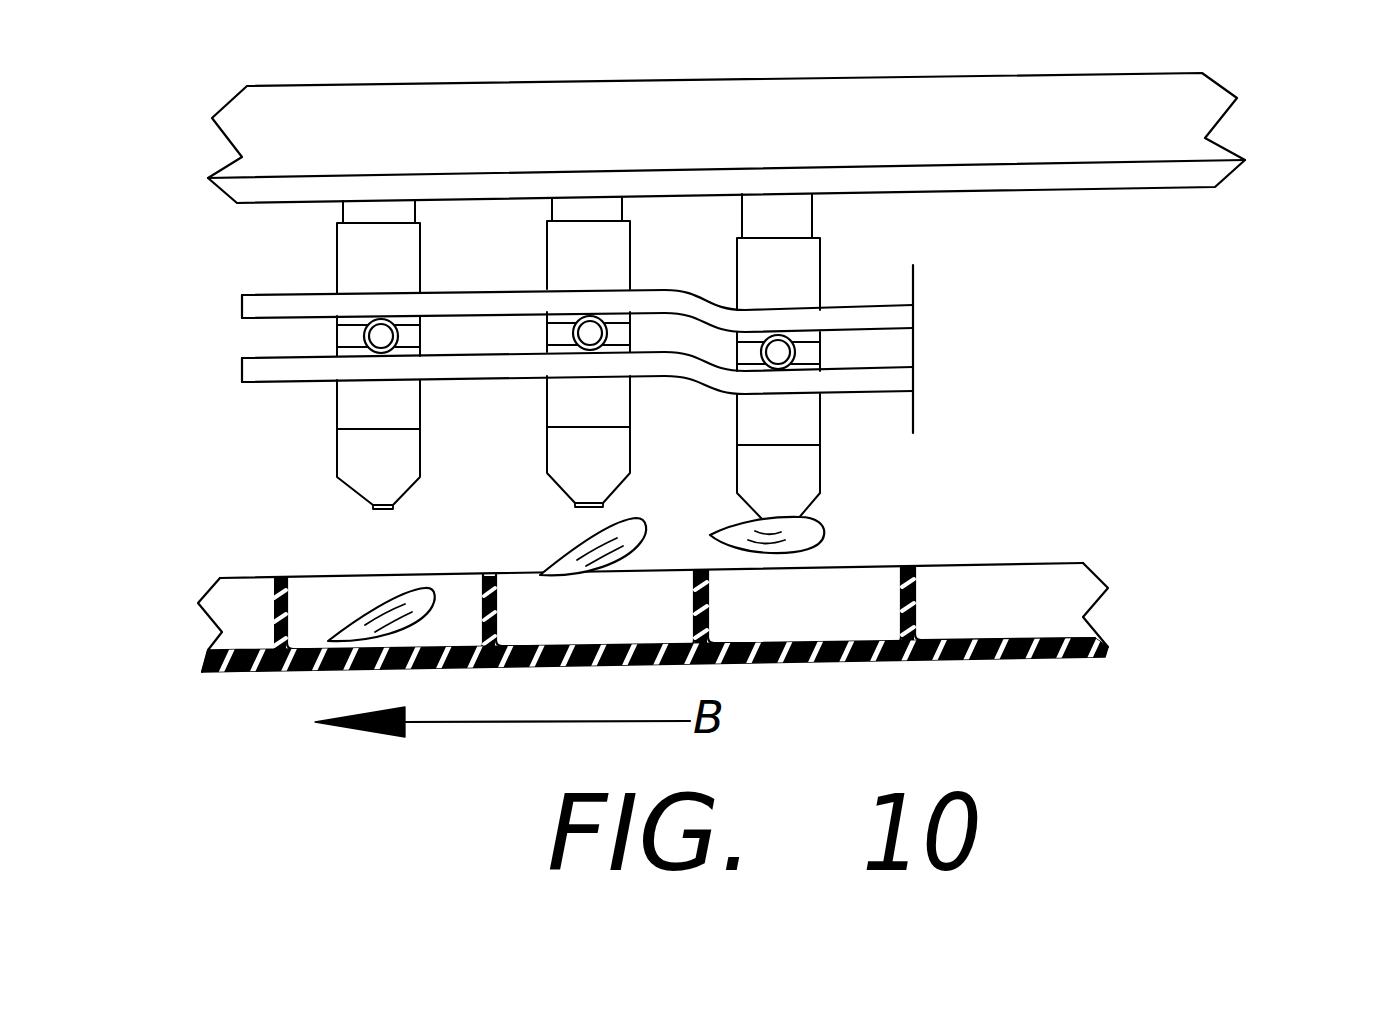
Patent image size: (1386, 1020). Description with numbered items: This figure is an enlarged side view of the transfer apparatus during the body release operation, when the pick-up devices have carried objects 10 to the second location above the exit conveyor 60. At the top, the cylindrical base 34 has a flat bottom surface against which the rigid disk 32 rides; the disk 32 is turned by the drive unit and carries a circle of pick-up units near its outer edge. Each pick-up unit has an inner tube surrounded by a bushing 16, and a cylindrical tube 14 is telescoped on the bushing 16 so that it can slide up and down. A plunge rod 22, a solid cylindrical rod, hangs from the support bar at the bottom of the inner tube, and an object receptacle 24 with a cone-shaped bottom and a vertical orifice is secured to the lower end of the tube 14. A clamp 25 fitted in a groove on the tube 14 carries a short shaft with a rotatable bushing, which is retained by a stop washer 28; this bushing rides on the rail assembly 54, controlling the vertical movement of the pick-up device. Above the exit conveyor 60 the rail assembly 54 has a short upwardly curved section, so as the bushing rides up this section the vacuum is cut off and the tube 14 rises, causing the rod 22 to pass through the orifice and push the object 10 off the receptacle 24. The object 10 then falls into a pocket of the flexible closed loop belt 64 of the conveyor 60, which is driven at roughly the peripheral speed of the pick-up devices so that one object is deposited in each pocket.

The object 10 is at (797, 542).
The cylindrical tube 14 is at (795, 268).
The bushing 16 is at (795, 200).
The plunge rod 22 is at (378, 506).
The object receptacle 24 is at (785, 472).
The clamp 25 is at (352, 342).
The stop washer 28 is at (373, 352).
The rigid disk 32 is at (1195, 175).
The cylindrical base 34 is at (1207, 97).
The rail assembly 54 is at (893, 318).
The exit conveyor 60 is at (1103, 647).
The flexible closed loop belt 64 is at (238, 615).